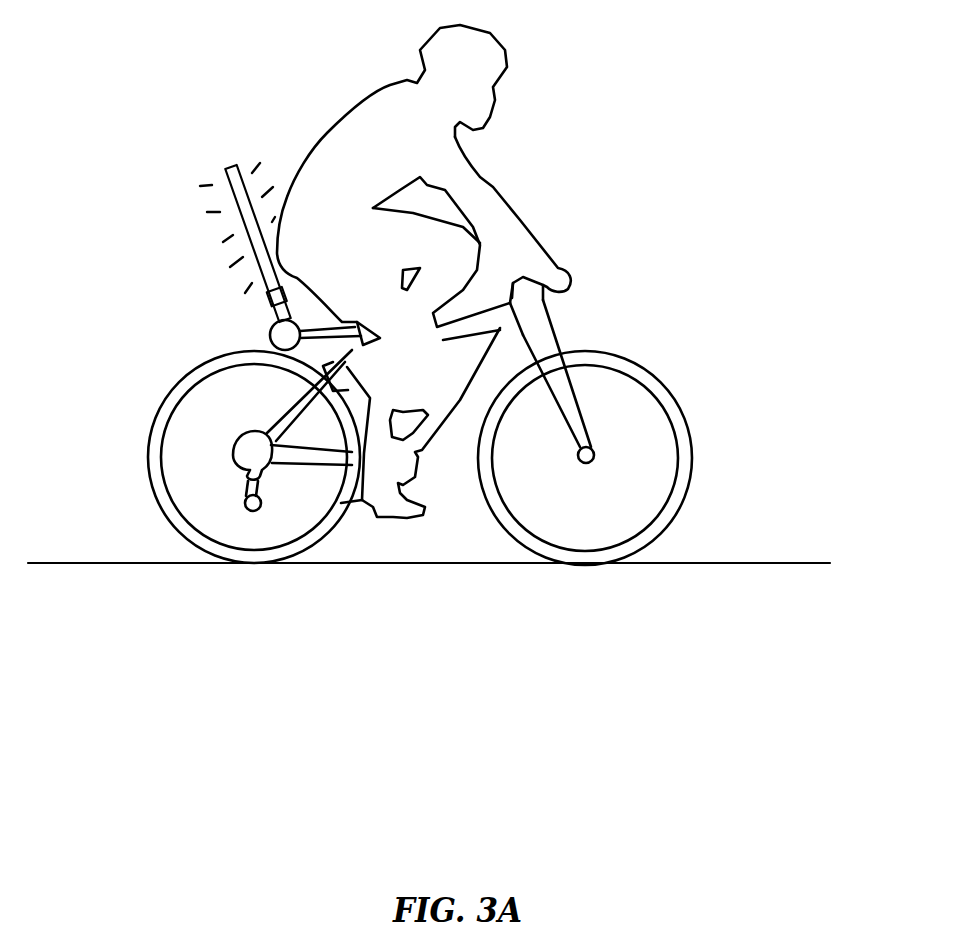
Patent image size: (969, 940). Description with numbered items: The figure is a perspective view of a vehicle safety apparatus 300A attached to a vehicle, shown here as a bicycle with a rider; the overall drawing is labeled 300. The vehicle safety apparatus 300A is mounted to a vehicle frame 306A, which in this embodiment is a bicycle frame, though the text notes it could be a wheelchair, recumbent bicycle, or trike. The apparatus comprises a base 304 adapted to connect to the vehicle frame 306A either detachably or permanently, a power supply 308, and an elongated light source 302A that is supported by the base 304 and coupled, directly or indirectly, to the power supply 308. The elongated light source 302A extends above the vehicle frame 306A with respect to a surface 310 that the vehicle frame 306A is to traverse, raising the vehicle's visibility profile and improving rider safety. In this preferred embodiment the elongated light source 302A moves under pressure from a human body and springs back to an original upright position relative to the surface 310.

The lighting device 300 is at (222, 160).
The vehicle safety apparatus 300A is at (258, 330).
The elongated light source 302A is at (252, 223).
The base 304 is at (275, 293).
The vehicle frame 306A is at (530, 330).
The power supply 308 is at (318, 320).
The surface 310 is at (760, 554).